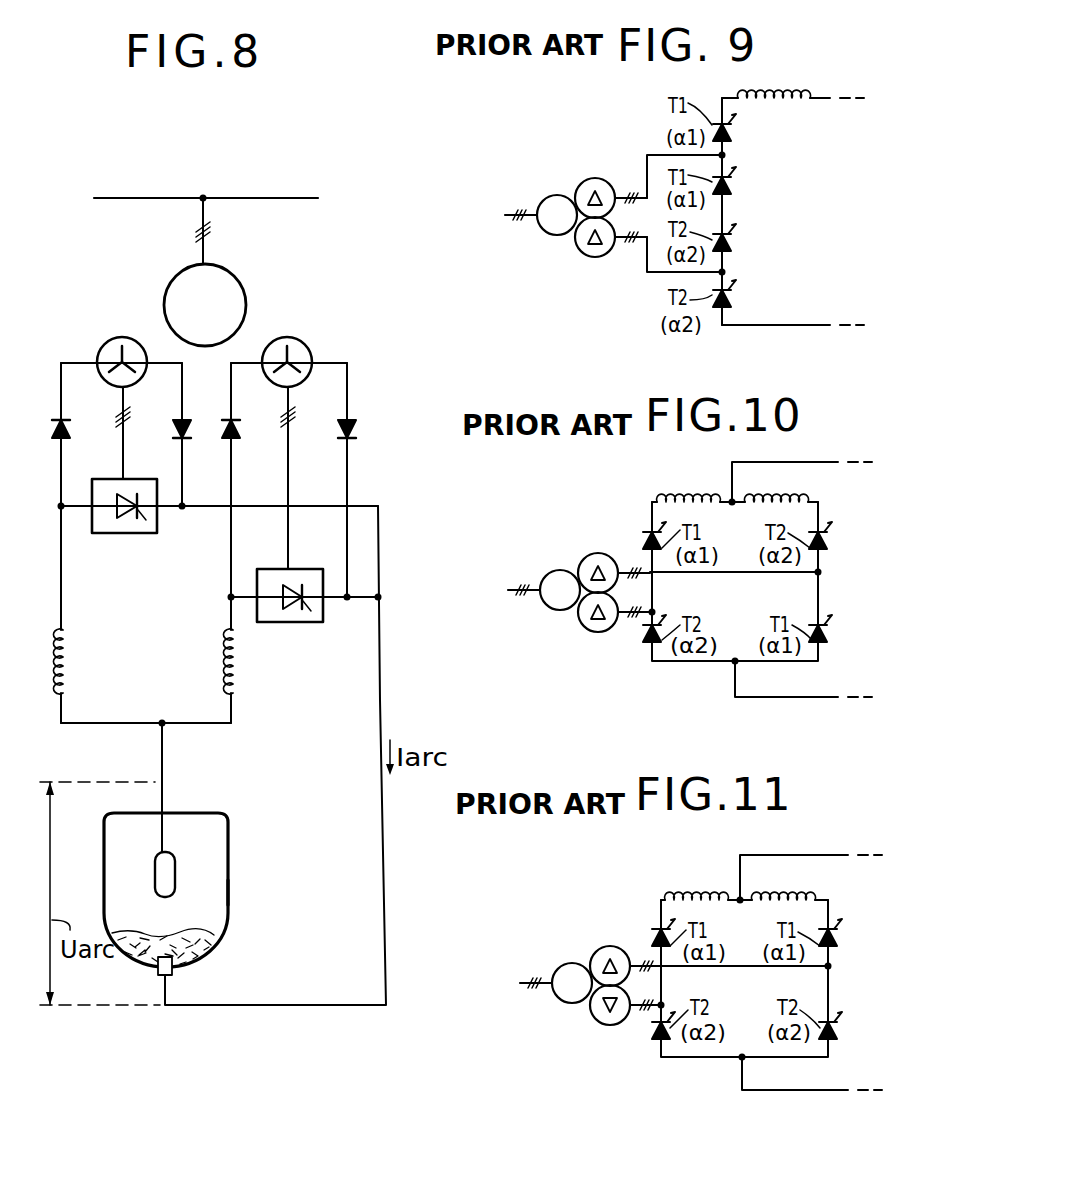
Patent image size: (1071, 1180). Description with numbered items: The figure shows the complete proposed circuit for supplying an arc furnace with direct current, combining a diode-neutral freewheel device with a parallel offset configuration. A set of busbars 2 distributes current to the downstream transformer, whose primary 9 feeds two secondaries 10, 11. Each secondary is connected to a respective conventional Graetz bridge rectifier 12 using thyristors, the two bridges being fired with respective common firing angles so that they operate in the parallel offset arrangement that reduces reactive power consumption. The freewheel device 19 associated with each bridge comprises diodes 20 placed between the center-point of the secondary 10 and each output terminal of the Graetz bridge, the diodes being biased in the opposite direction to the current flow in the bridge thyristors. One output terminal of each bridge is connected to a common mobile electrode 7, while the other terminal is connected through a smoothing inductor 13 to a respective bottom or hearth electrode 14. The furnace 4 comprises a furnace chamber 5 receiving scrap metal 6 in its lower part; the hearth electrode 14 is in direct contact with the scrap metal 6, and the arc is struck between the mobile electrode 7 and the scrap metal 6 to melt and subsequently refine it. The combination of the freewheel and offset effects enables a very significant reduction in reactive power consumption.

The busbars 2 is at (266, 196).
The primary of the downstream transformer 9 is at (246, 292).
The secondary 10 is at (107, 338).
The secondary 11 is at (304, 338).
The freewheel device 19 is at (52, 404).
The diodes 20 is at (70, 430).
The Graetz bridge rectifier 12 is at (158, 527).
The smoothing inductor 13 is at (80, 668).
The furnace 4 is at (240, 850).
The furnace chamber 5 is at (229, 892).
The scrap metal 6 is at (204, 930).
The mobile electrode 7 is at (178, 870).
The bottom or hearth electrode 14 is at (176, 970).